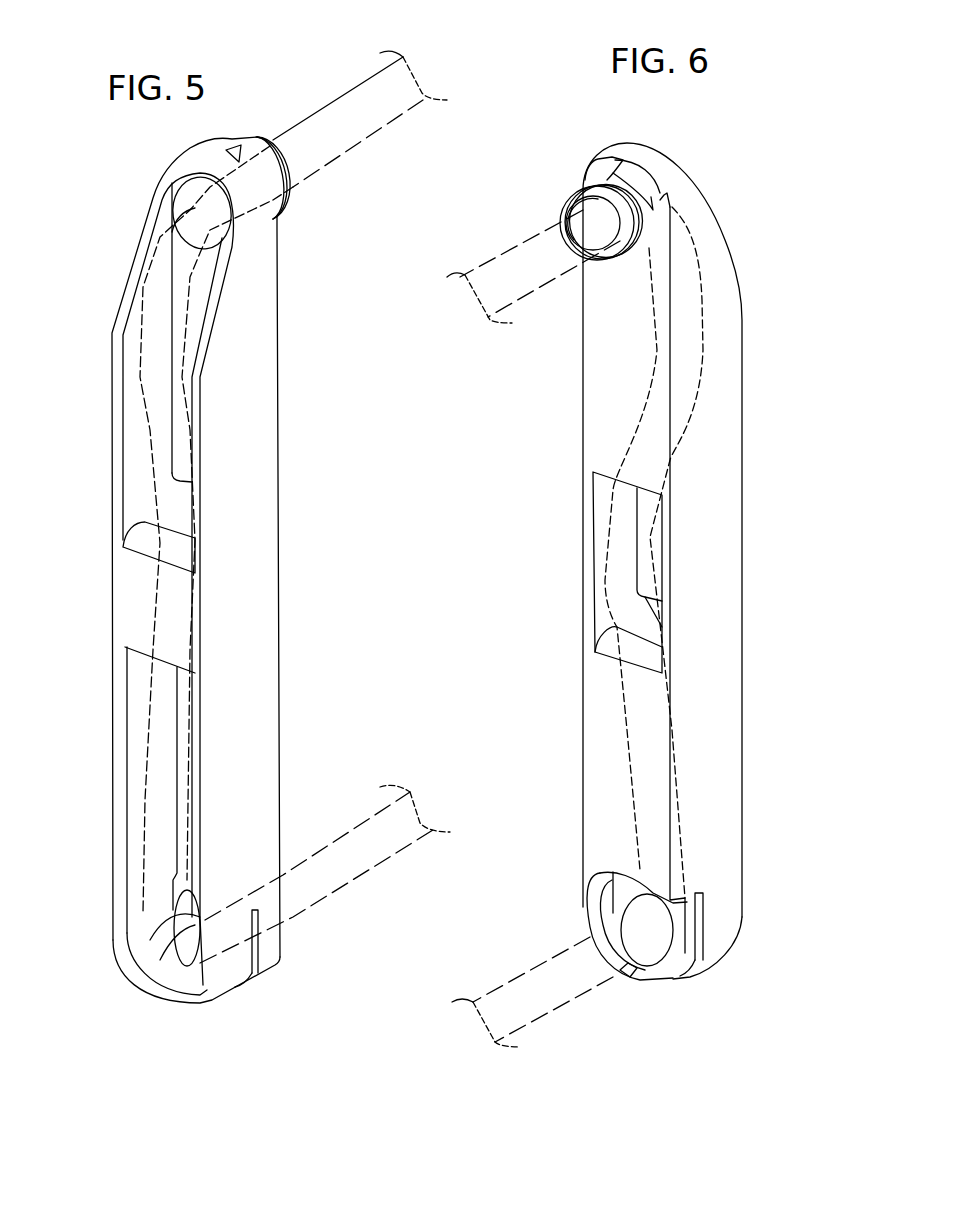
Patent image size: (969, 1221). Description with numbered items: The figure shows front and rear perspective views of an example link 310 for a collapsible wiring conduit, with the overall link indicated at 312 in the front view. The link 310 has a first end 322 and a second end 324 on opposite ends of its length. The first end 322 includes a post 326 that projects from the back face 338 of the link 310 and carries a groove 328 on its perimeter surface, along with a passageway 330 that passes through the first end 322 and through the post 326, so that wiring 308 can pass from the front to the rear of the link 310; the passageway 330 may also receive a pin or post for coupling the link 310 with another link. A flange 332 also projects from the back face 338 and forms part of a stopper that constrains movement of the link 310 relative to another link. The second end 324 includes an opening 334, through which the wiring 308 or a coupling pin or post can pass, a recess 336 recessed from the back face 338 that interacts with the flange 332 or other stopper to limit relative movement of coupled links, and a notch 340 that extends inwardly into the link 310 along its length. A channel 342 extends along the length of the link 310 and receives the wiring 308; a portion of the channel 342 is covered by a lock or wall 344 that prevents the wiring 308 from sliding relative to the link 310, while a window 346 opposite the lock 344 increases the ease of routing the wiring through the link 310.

In FIG. 5, the wiring 308 is at (358, 88).
In FIG. 6, the wiring 308 is at (518, 250).
In FIG. 5, the link 310 is at (128, 160).
In FIG. 6, the link 310 is at (769, 258).
In FIG. 5, the clip body 312 is at (153, 197).
In FIG. 6, the first end 322 is at (712, 208).
In FIG. 5, the second end 324 is at (195, 1000).
In FIG. 6, the second end 324 is at (733, 930).
In FIG. 5, the post 326 is at (293, 195).
In FIG. 6, the post 326 is at (568, 193).
In FIG. 5, the groove 328 is at (290, 162).
In FIG. 6, the groove 328 is at (600, 160).
In FIG. 5, the passageway 330 is at (190, 217).
In FIG. 6, the passageway 330 is at (578, 205).
In FIG. 6, the flange 332 is at (628, 174).
In FIG. 5, the opening 334 is at (150, 937).
In FIG. 6, the opening 334 is at (627, 897).
In FIG. 6, the recess 336 is at (633, 963).
In FIG. 6, the back face 338 is at (613, 772).
In FIG. 5, the notch 340 is at (262, 958).
In FIG. 6, the notch 340 is at (703, 937).
In FIG. 5, the channel 342 is at (137, 490).
In FIG. 5, the lock or wall 344 is at (133, 593).
In FIG. 6, the window 346 is at (603, 487).